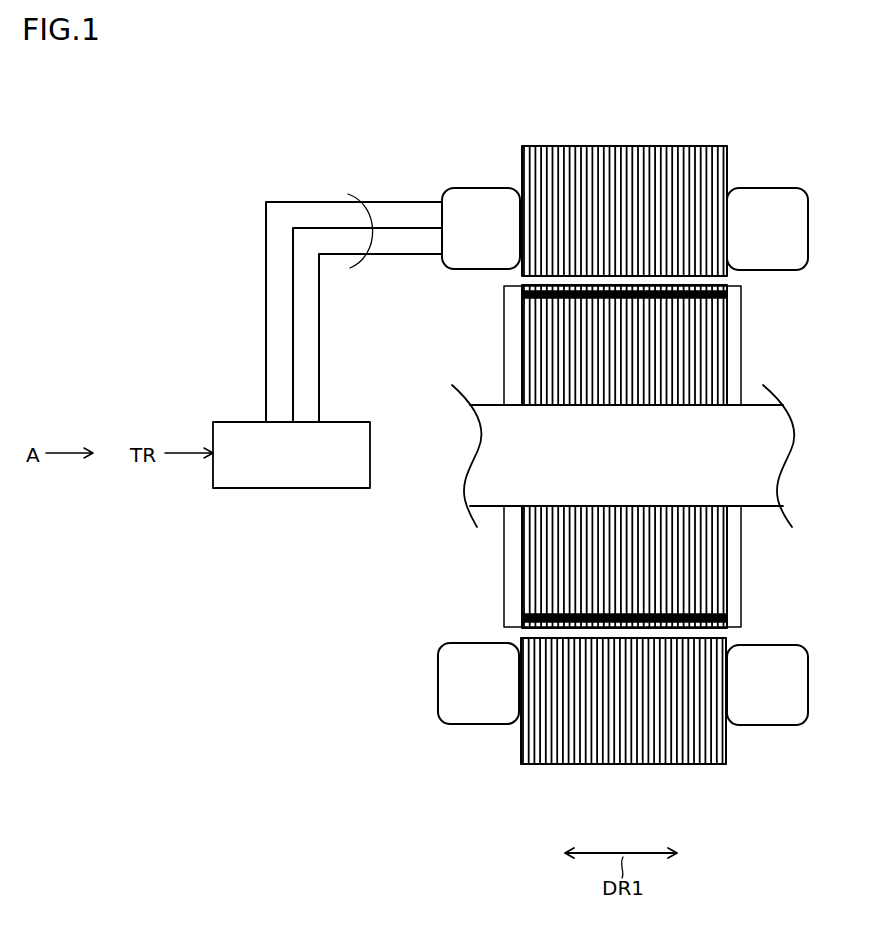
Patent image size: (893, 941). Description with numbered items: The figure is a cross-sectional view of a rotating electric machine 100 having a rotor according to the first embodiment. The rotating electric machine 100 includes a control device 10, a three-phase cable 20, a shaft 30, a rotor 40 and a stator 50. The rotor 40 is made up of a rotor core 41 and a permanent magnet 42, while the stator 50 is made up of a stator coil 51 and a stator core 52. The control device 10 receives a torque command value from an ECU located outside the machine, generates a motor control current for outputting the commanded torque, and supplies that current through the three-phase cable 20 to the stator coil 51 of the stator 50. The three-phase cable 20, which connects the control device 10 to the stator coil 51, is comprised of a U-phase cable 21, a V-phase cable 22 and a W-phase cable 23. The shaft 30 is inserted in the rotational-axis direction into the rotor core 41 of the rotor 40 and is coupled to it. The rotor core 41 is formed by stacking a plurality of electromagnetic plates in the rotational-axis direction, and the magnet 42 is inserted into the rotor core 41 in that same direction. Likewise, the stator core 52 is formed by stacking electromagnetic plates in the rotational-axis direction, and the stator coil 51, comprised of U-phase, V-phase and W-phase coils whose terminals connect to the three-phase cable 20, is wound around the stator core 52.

The rotating electric machine 100 is at (538, 86).
The control device 10 is at (352, 421).
The three-phase cable 20 is at (354, 282).
The U-phase cable 21 is at (330, 202).
The V-phase cable 22 is at (304, 226).
The W-phase cable 23 is at (335, 255).
The shaft 30 is at (750, 463).
The rotor 40 is at (745, 347).
The rotor core 41 is at (537, 351).
The permanent magnet 42 is at (733, 293).
The stator 50 is at (727, 163).
The stator coil 51 is at (468, 250).
The stator core 52 is at (666, 158).